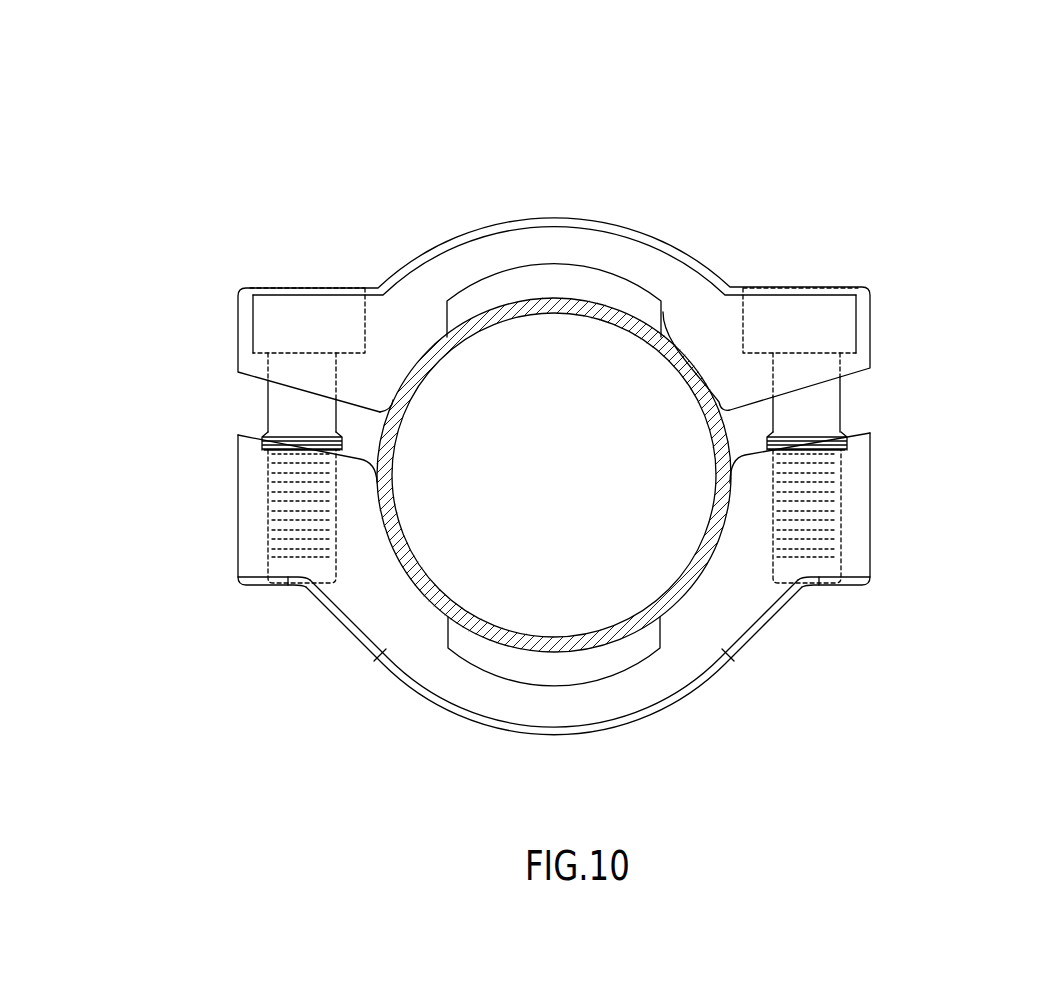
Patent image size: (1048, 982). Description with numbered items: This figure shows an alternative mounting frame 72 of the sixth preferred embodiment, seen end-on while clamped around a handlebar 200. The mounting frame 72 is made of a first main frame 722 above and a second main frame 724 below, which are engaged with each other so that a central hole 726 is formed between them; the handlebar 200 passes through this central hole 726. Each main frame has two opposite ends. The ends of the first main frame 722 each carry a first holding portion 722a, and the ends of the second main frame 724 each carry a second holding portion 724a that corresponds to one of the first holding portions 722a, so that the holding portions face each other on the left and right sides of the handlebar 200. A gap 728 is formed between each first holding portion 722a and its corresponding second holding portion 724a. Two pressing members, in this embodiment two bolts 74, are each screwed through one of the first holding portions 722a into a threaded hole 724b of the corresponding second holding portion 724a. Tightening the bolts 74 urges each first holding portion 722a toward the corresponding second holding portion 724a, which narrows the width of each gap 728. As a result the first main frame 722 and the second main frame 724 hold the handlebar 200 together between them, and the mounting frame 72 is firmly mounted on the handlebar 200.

The mounting frame 72 is at (582, 198).
The handlebar 200 is at (445, 338).
The first main frame 722 is at (702, 307).
The first holding portion 722a is at (253, 362).
The second main frame 724 is at (418, 655).
The second holding portion 724a is at (250, 567).
The threaded hole 724b is at (272, 556).
The central hole 726 is at (393, 400).
The gap 728 is at (257, 412).
The bolt 74 is at (820, 432).